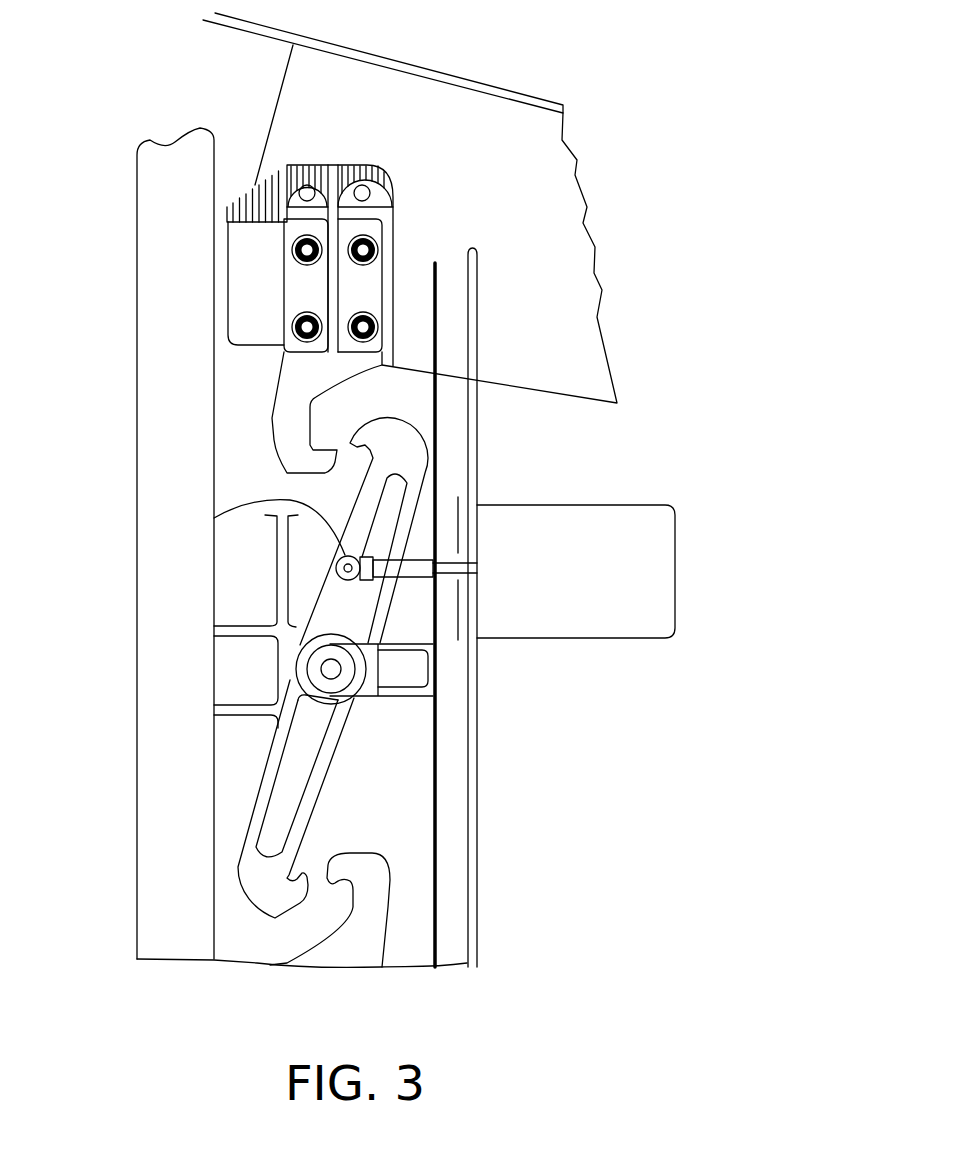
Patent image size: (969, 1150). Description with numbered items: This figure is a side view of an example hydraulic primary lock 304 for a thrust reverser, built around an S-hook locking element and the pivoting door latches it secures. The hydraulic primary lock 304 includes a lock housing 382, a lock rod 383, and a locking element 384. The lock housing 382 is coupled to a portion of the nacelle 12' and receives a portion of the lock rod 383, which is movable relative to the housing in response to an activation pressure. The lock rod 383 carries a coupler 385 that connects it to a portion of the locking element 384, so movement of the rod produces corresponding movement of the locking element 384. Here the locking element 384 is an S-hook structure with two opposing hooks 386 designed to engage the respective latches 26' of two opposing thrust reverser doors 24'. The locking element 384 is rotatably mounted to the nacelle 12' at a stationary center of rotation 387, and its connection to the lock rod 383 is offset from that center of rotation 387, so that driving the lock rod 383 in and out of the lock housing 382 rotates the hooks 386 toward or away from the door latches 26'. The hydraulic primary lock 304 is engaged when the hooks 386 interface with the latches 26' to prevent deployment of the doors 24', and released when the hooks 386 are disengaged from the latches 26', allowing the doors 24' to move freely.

The nacelle 12' is at (315, 548).
The thrust reverser door 24' is at (441, 208).
The latch 26' is at (302, 659).
The hydraulic primary lock 304 is at (651, 520).
The lock housing 382 is at (675, 553).
The lock rod 383 is at (447, 573).
The locking element 384 is at (386, 722).
The coupler 385 is at (214, 518).
The hook 386 is at (395, 443).
The center of rotation 387 is at (340, 673).